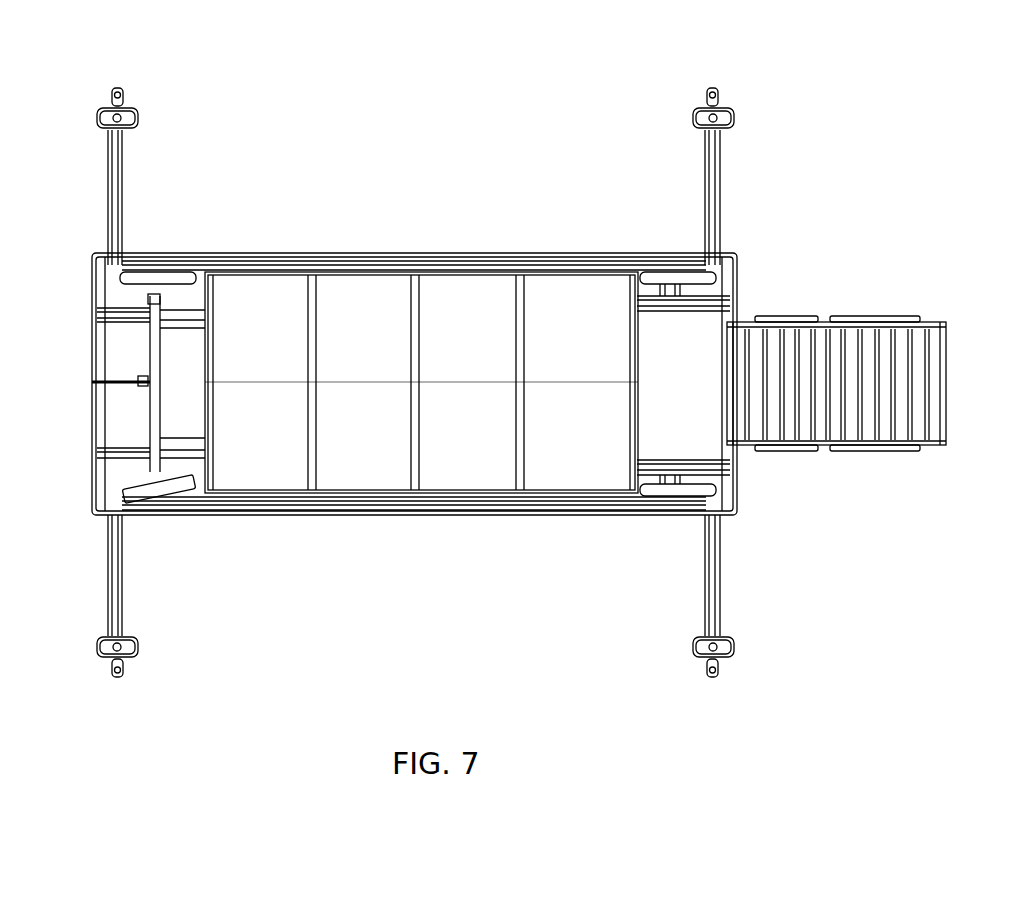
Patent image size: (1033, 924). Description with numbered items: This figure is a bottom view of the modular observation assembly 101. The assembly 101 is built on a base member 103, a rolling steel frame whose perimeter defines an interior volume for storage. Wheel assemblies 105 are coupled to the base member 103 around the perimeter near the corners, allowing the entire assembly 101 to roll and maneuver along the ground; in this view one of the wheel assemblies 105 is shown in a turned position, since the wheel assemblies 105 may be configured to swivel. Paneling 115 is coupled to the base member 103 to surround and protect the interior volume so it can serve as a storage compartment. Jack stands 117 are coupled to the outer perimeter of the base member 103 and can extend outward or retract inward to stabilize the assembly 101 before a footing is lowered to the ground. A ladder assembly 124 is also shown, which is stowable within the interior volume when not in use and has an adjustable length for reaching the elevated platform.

The modular observation assembly 101 is at (433, 52).
The base member 103 is at (352, 507).
The wheel assembly 105 is at (176, 497).
The paneling 115 is at (388, 357).
The jack stand 117 is at (85, 110).
The ladder assembly 124 is at (852, 318).